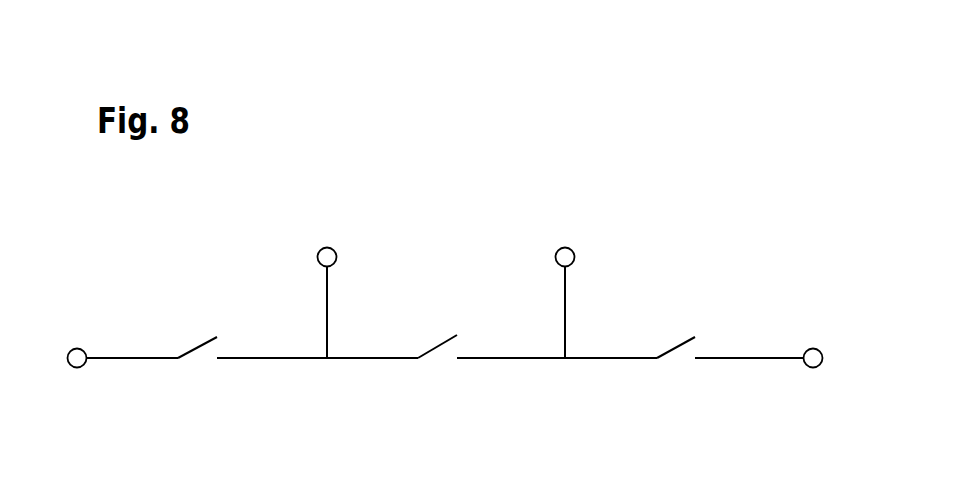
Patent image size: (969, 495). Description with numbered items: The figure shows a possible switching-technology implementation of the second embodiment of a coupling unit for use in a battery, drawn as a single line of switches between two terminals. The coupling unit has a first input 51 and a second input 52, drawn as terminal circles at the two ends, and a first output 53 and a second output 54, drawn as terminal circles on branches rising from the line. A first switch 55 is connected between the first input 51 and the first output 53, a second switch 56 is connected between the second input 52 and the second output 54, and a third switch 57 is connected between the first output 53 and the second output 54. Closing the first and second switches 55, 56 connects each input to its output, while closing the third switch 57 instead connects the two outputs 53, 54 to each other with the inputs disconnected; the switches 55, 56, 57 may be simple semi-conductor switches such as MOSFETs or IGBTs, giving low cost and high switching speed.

The first input 51 is at (78, 347).
The second input 52 is at (814, 347).
The first output 53 is at (326, 246).
The second output 54 is at (565, 246).
The first switch 55 is at (196, 343).
The second switch 56 is at (676, 345).
The third switch 57 is at (437, 345).